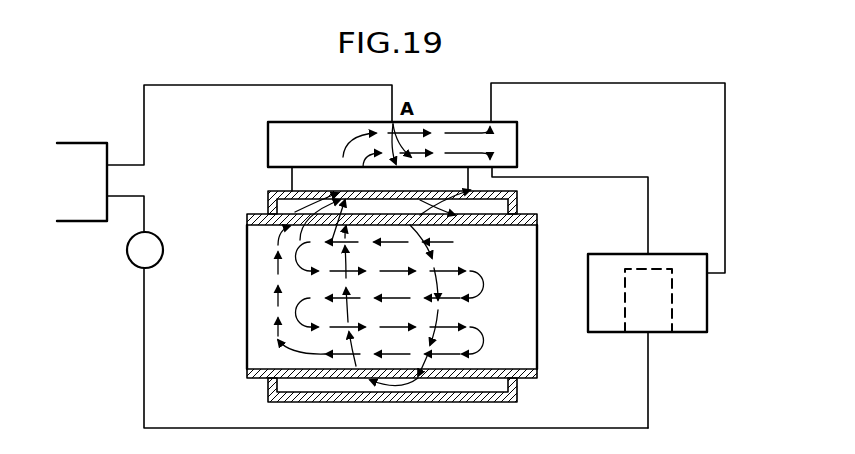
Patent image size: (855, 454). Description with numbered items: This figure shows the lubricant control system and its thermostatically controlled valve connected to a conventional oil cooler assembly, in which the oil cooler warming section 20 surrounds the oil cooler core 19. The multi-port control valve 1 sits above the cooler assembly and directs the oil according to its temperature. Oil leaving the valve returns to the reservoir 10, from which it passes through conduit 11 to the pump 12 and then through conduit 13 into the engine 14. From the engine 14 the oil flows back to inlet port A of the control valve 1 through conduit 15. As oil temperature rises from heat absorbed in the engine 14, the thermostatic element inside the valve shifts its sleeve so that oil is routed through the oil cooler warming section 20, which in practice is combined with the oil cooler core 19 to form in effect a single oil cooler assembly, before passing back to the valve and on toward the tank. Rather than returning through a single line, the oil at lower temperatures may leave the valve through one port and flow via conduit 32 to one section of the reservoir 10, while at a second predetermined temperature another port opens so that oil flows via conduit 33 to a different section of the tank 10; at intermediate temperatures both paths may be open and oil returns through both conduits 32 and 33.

The control valve 1 is at (502, 126).
The reservoir 10 is at (692, 304).
The conduit 11 is at (174, 429).
The pump 12 is at (147, 250).
The conduit 13 is at (144, 205).
The engine 14 is at (63, 153).
The conduit 15 is at (232, 85).
The oil cooler core 19 is at (520, 342).
The oil cooler warming section 20 is at (487, 383).
The conduit 32 is at (560, 177).
The conduit 33 is at (562, 83).